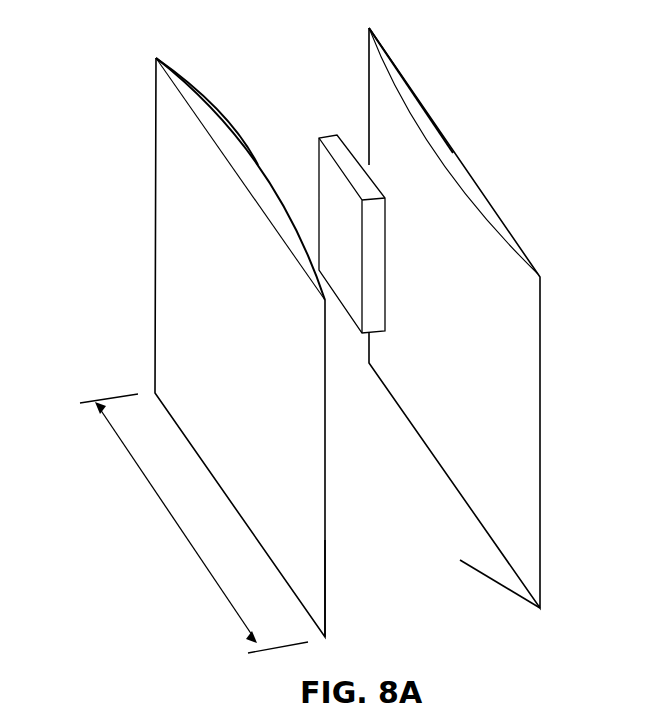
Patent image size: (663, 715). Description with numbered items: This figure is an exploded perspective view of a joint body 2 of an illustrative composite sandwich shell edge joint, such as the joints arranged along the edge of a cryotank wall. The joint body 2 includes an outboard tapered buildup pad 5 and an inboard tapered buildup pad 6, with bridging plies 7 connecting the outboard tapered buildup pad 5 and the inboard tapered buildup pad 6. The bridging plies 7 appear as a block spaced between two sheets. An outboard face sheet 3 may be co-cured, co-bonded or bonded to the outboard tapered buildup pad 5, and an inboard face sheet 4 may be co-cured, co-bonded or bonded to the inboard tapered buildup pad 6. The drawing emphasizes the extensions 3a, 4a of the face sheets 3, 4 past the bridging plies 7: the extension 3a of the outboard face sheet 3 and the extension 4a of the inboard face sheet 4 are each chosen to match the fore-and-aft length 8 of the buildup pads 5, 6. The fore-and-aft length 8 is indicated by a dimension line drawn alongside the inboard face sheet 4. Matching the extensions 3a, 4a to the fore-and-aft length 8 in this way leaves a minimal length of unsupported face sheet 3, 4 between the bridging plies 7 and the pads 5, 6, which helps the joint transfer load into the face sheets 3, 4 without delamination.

The joint body 2 is at (126, 68).
The outboard face sheet 3 is at (443, 157).
The extension of outboard face sheet 3a is at (391, 65).
The inboard face sheet 4 is at (256, 188).
The extension of inboard face sheet 4a is at (199, 100).
The outboard tapered buildup pad 5 is at (521, 588).
The inboard tapered buildup pad 6 is at (327, 583).
The bridging plies 7 is at (333, 138).
The fore-and-aft length 8 is at (178, 522).